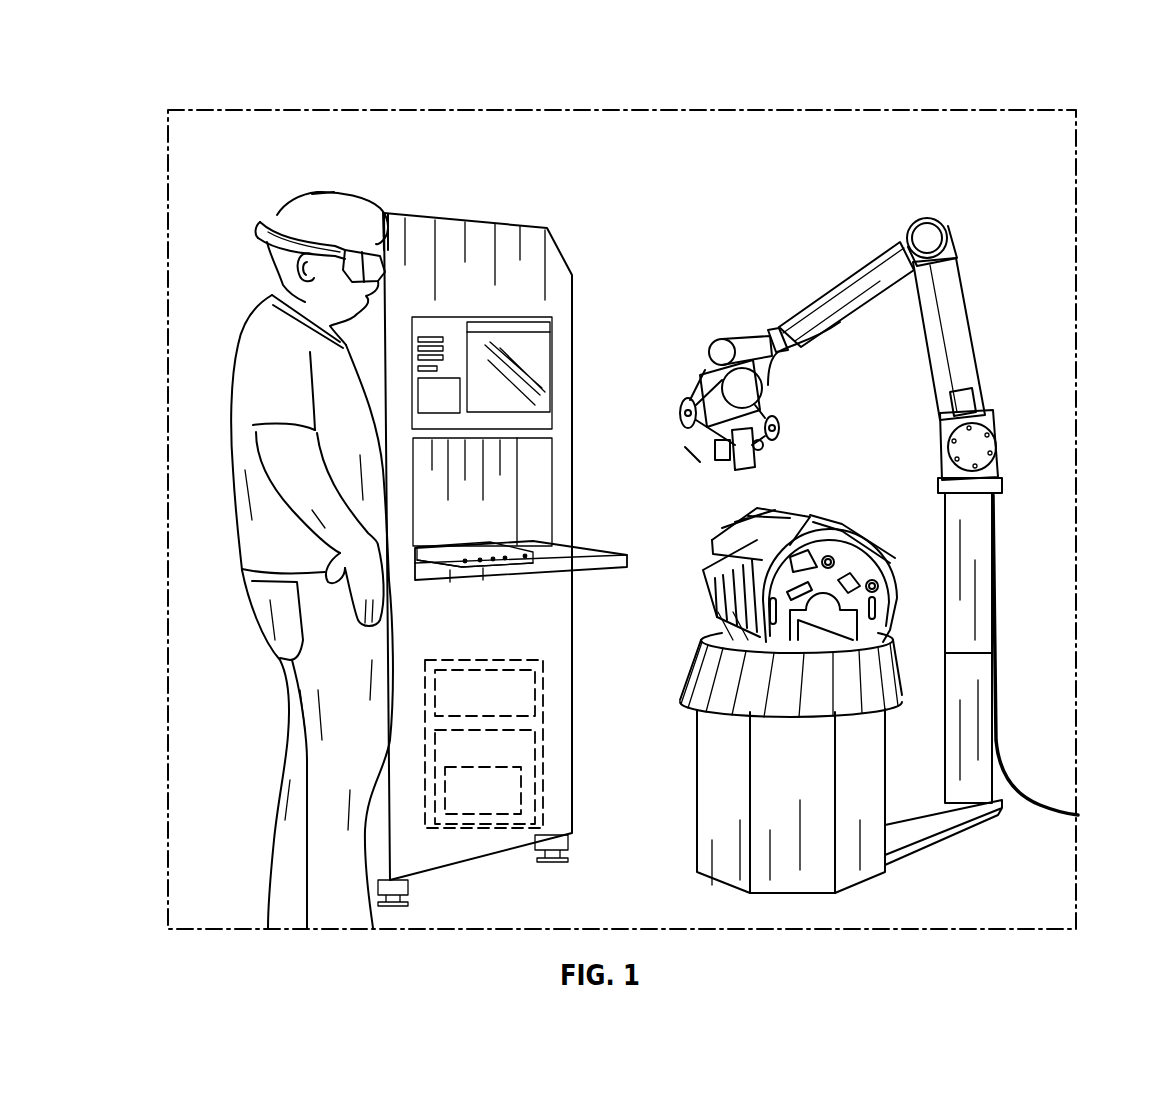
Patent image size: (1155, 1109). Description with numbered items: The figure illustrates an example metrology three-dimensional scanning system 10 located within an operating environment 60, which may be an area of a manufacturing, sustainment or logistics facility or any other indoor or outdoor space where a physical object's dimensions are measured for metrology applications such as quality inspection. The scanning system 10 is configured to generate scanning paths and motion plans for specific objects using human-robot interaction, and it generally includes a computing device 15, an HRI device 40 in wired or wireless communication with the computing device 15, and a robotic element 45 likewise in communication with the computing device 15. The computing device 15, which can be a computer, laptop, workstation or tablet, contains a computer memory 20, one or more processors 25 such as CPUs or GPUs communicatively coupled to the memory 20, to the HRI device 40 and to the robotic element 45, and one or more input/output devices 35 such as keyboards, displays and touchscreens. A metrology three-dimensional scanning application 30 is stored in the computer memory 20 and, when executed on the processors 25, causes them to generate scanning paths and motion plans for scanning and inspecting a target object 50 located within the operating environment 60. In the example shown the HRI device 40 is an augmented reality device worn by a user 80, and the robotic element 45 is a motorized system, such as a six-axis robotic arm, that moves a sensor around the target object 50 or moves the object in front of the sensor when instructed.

The metrology 3D scanning system 10 is at (171, 102).
The operating environment 60 is at (168, 160).
The operator / user 80 is at (255, 302).
The HRI device 40 is at (388, 277).
The computing device 15 is at (580, 300).
The input/output devices 35 is at (540, 356).
The processors 25 is at (501, 704).
The computer memory 20 is at (501, 759).
The metrology 3D scanning application 30 is at (501, 802).
The robotic element 45 is at (964, 291).
The target object 50 is at (798, 505).